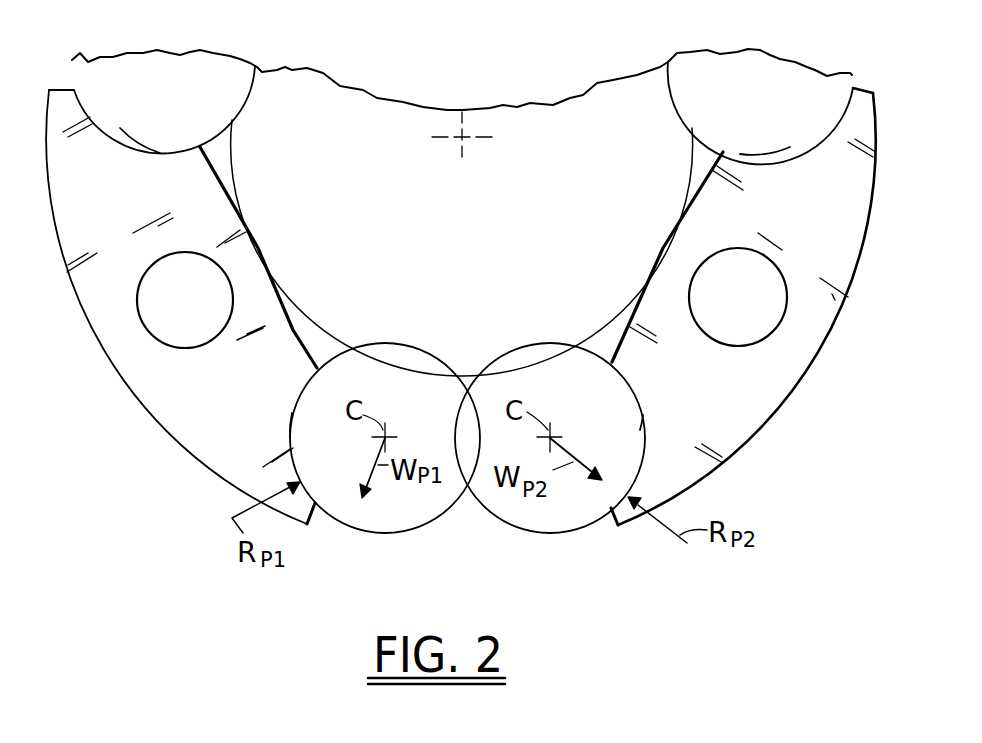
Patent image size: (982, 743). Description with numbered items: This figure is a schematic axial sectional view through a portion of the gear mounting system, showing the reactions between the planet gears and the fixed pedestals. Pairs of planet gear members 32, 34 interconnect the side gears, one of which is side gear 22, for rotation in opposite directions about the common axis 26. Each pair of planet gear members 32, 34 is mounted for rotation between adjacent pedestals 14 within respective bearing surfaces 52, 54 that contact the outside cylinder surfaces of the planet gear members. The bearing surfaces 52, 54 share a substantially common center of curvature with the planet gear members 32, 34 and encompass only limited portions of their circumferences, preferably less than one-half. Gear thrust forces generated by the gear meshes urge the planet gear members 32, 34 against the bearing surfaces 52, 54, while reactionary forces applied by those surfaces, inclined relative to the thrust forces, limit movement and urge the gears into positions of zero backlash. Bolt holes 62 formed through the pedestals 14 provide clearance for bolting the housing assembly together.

The pedestal 14 is at (663, 302).
The side gear 22 is at (288, 290).
The common axis 26 is at (460, 138).
The planet gear member 32 is at (755, 82).
The planet gear member 34 is at (107, 68).
The bearing surface 52 is at (792, 154).
The bearing surface 54 is at (131, 133).
The bolt hole 62 is at (142, 317).